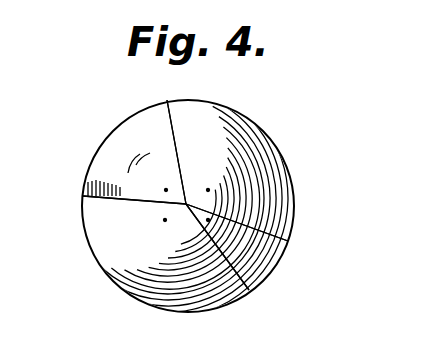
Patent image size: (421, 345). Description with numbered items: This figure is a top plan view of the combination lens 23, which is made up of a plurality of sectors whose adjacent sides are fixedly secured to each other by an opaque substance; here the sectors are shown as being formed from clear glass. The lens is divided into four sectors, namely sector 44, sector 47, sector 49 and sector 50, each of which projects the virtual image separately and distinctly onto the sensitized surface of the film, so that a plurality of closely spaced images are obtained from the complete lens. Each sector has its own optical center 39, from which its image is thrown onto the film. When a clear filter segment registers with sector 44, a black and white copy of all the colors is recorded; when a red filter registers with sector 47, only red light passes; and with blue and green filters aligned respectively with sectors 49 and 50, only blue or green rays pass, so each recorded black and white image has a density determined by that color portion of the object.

The combination lens 23 is at (86, 164).
The optical center 39 is at (207, 188).
The sector 44 is at (258, 262).
The sector 47 is at (125, 272).
The sector 49 is at (120, 140).
The sector 50 is at (261, 146).